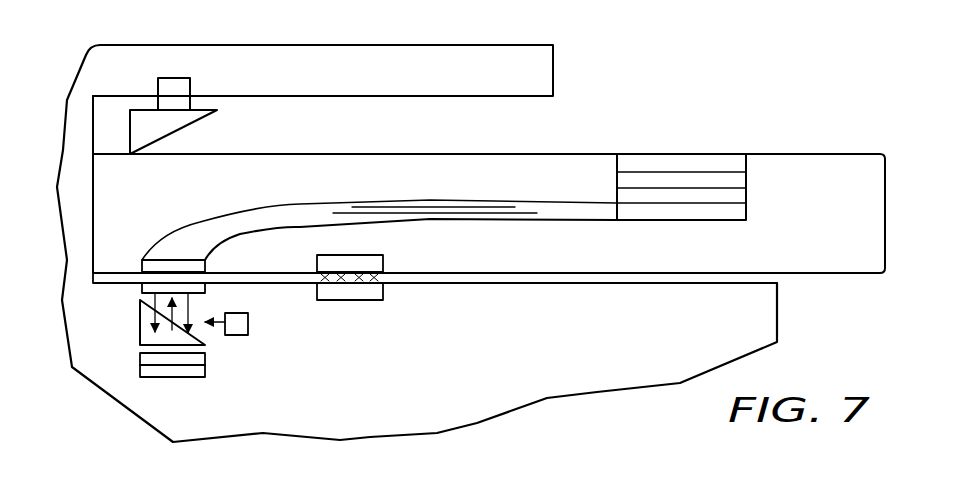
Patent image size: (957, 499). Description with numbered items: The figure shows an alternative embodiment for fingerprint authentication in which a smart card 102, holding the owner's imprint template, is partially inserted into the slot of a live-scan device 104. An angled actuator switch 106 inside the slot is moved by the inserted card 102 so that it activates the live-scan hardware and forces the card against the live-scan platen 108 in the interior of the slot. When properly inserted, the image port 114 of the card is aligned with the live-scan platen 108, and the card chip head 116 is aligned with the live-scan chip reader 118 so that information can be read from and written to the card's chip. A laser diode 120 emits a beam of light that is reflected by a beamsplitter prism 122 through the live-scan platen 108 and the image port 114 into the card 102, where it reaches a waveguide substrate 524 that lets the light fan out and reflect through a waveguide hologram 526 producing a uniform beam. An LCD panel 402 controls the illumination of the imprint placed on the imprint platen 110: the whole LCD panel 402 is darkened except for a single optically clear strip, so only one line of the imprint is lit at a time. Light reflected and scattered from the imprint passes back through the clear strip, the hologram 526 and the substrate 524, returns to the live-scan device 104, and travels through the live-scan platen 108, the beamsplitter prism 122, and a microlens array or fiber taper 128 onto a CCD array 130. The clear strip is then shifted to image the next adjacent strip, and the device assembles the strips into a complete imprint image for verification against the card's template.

The card 102 is at (848, 155).
The live-scan device 104 is at (340, 46).
The actuator switch 106 is at (158, 88).
The live-scan platen 108 is at (207, 289).
The imprint platen 110 is at (718, 162).
The image port 114 is at (207, 265).
The card chip head 116 is at (384, 262).
The live-scan chip reader 118 is at (384, 292).
The laser diode 120 is at (250, 326).
The beamsplitter prism 122 is at (140, 328).
The microlens array or fiber taper 128 is at (205, 364).
The CCD array 130 is at (173, 377).
The LCD panel 402 is at (620, 178).
The waveguide substrate 524 is at (718, 213).
The waveguide hologram of a uniform beam of light 526 is at (742, 197).